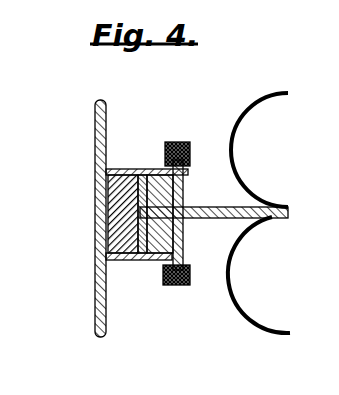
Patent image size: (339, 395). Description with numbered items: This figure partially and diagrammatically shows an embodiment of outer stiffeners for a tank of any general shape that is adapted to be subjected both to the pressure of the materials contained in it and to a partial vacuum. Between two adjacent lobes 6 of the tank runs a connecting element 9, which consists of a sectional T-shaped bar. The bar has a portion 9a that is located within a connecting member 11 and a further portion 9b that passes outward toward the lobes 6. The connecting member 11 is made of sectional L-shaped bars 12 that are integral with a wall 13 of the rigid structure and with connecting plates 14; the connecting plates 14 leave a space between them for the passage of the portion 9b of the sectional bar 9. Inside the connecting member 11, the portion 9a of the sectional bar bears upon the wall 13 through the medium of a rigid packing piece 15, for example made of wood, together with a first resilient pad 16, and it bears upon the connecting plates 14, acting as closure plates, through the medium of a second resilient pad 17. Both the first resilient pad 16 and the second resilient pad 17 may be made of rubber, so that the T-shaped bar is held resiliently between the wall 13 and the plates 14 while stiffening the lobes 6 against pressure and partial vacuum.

The lobe 6 is at (233, 155).
The connecting element 9 is at (205, 219).
The portion of the sectional bar 9a is at (155, 261).
The portion of the sectional bar 9b is at (230, 219).
The connecting member 11 is at (140, 166).
The sectional L-shaped bar 12 is at (116, 169).
The wall 13 is at (98, 112).
The connecting plate 14 is at (187, 196).
The rigid packing piece 15 is at (96, 243).
The first resilient pad 16 is at (138, 261).
The second resilient pad 17 is at (190, 160).